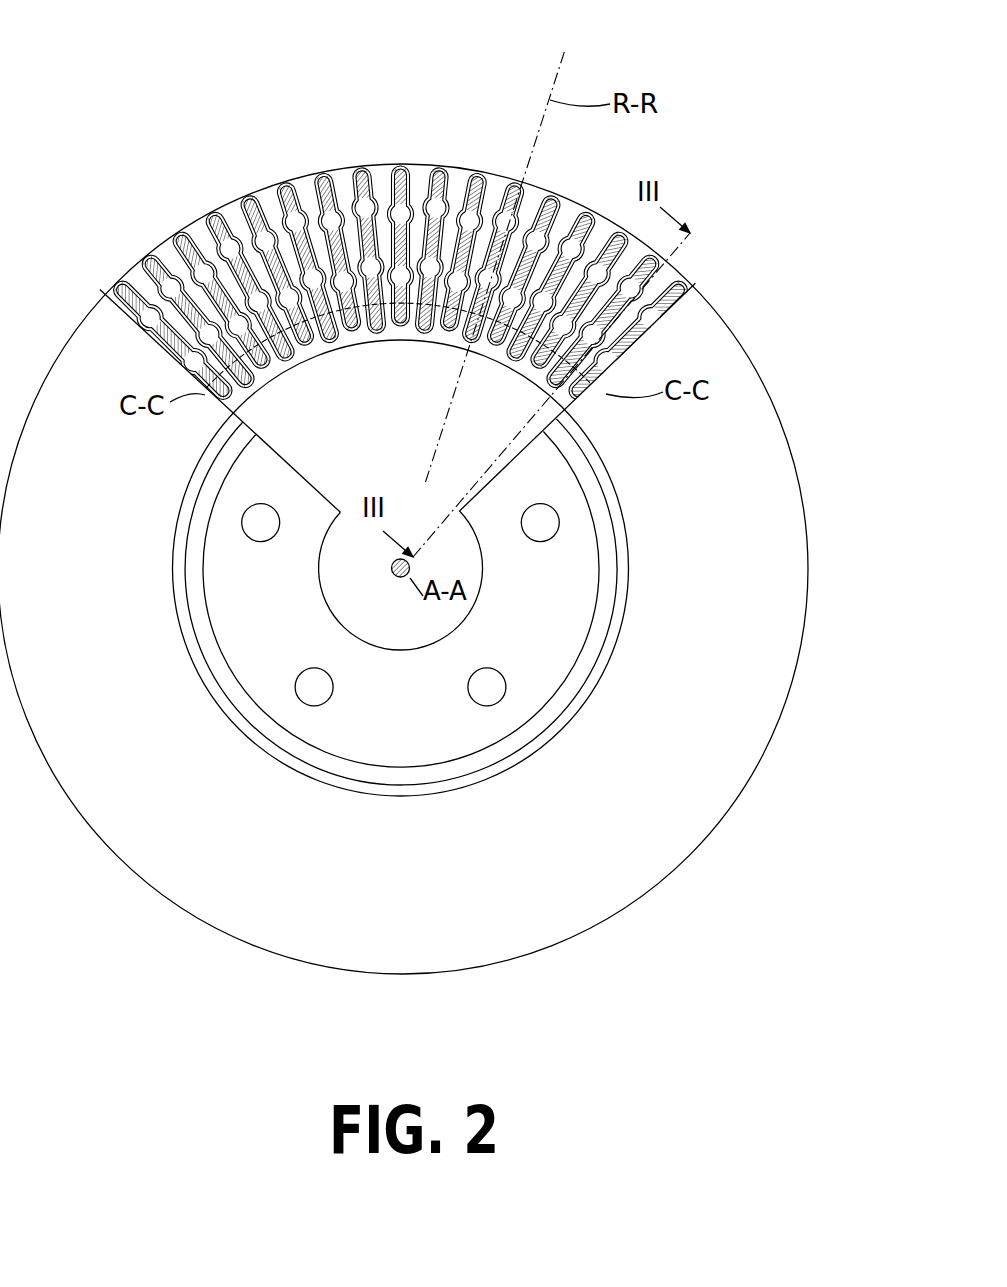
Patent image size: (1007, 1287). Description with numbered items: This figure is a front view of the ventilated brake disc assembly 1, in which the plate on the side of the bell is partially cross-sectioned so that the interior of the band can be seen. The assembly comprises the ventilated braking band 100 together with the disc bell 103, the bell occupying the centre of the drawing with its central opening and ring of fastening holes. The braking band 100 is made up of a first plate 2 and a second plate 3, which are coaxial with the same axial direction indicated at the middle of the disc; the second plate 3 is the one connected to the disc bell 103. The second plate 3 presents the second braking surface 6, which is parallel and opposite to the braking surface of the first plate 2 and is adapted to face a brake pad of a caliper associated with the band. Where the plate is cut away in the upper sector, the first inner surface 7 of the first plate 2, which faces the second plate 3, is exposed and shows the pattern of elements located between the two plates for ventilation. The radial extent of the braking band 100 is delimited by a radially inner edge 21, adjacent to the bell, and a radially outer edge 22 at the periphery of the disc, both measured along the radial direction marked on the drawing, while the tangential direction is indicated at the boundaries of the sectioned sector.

The ventilated brake disc assembly 1 is at (755, 213).
The first plate 2 is at (222, 203).
The second plate 3 is at (557, 890).
The second braking surface 6 is at (675, 812).
The first inner surface 7 is at (256, 196).
The radially inner edge 21 is at (356, 352).
The radially outer edge 22 is at (316, 175).
The ventilated braking band 100 is at (727, 673).
The disc bell 103 is at (352, 733).